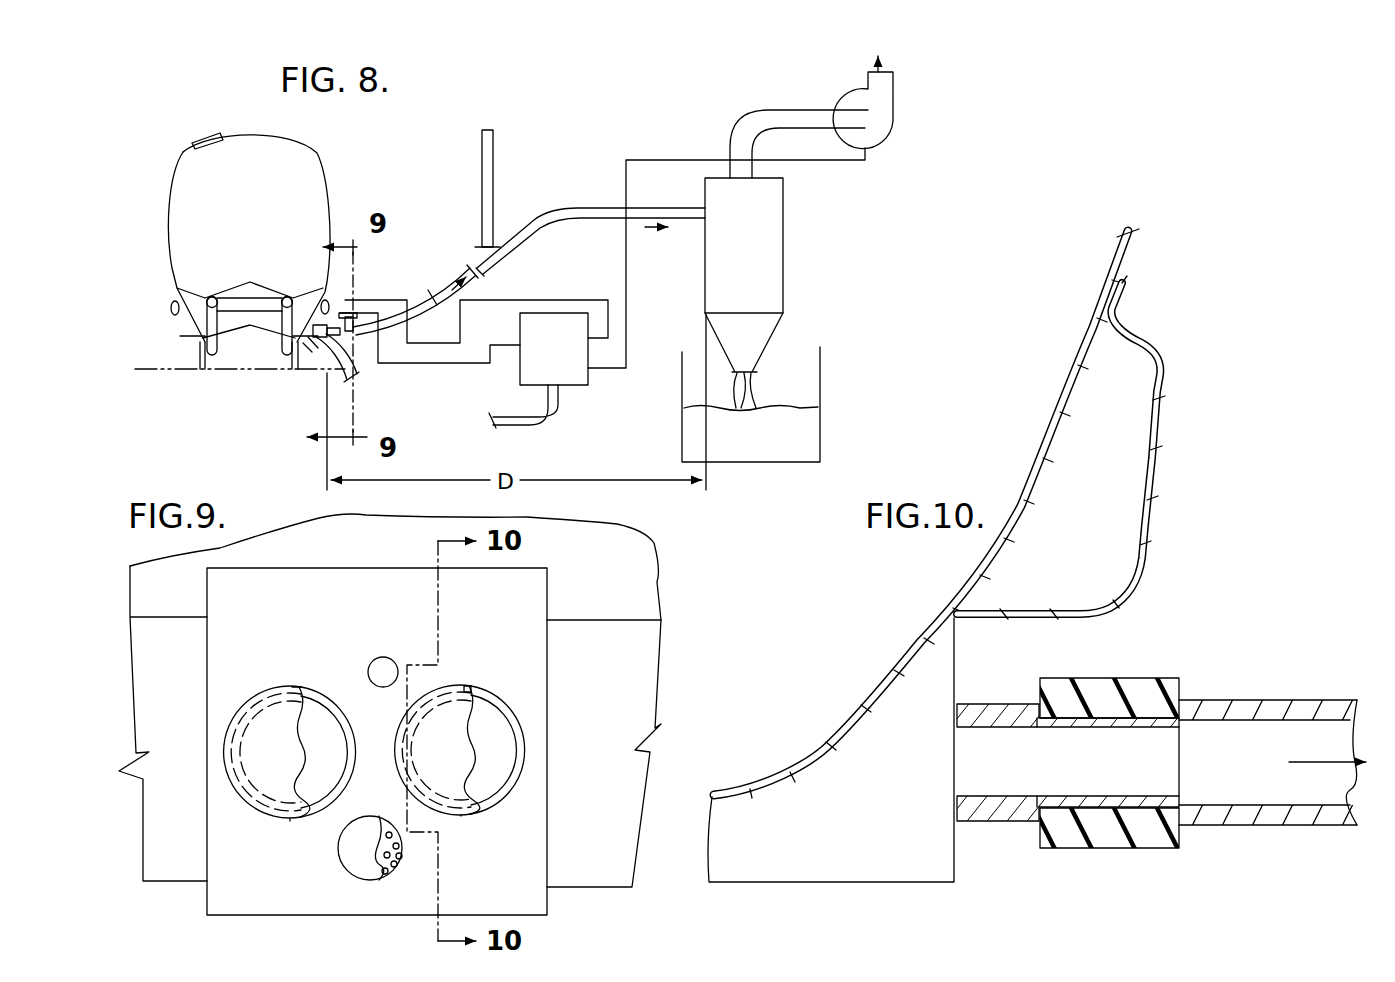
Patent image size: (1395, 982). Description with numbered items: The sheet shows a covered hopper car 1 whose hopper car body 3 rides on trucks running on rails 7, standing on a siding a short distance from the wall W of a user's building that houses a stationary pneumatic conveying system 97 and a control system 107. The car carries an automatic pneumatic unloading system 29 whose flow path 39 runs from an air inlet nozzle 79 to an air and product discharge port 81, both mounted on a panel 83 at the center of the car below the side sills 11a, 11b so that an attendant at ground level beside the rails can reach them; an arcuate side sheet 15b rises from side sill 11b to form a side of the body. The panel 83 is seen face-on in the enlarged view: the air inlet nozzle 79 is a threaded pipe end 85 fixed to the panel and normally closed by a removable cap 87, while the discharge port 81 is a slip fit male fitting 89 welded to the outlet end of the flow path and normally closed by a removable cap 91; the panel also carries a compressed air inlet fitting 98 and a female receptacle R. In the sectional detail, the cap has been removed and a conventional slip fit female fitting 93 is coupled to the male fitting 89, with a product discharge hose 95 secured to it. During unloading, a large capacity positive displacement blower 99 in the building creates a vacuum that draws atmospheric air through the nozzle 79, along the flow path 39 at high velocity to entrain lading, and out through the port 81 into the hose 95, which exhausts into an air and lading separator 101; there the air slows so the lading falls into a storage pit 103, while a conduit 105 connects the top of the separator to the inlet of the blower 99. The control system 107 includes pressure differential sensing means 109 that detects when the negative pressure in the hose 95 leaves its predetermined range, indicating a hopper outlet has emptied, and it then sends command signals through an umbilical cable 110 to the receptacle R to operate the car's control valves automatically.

In FIG. 8, the covered hopper car 1 is at (172, 164).
In FIG. 8, the hopper car body 3 is at (169, 231).
In FIG. 8, the rails 7 is at (188, 367).
In FIG. 8, the side sill 11a is at (171, 310).
In FIG. 9, the side sill 11b is at (630, 592).
In FIG. 10, the side sill 11b is at (1163, 445).
In FIG. 9, the arcuate side sheet 15b is at (610, 675).
In FIG. 10, the arcuate side sheet 15b is at (1130, 256).
In FIG. 8, the automatic pneumatic unloading system 29 is at (338, 300).
In FIG. 8, the flow path 39 is at (223, 355).
In FIG. 9, the air inlet nozzle 79 is at (313, 819).
In FIG. 8, the air and product discharge port 81 is at (320, 326).
In FIG. 9, the air and product discharge port 81 is at (504, 812).
In FIG. 10, the air and product discharge port 81 is at (1032, 830).
In FIG. 8, the panel 83 is at (311, 352).
In FIG. 9, the panel 83 is at (204, 919).
In FIG. 10, the panel 83 is at (960, 862).
In FIG. 9, the pipe end 85 is at (302, 690).
In FIG. 9, the cap 87 is at (268, 738).
In FIG. 9, the slip fit male fitting 89 is at (497, 702).
In FIG. 10, the slip fit male fitting 89 is at (970, 704).
In FIG. 9, the removable cap 91 is at (454, 742).
In FIG. 10, the slip fit female fitting 93 is at (1111, 678).
In FIG. 8, the product discharge hose 95 is at (417, 305).
In FIG. 10, the product discharge hose 95 is at (1216, 700).
In FIG. 8, the stationary pneumatic conveying system 97 is at (806, 265).
In FIG. 9, the compressed air inlet fitting 98 is at (381, 657).
In FIG. 8, the positive displacement blower 99 is at (893, 146).
In FIG. 8, the air and lading separator 101 is at (783, 310).
In FIG. 8, the storage pit 103 is at (820, 375).
In FIG. 8, the conduit 105 is at (747, 115).
In FIG. 8, the control system 107 is at (566, 392).
In FIG. 8, the pressure differential sensing means 109 is at (345, 335).
In FIG. 8, the umbilical cable 110 is at (517, 425).
In FIG. 8, the wall W is at (495, 170).
In FIG. 9, the female receptacle R is at (379, 880).